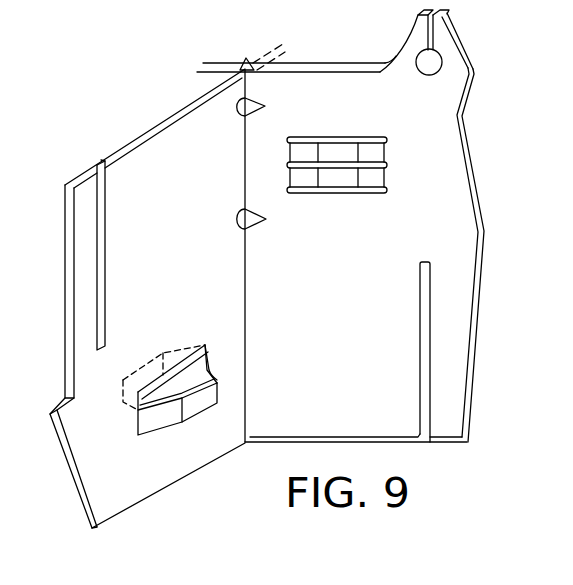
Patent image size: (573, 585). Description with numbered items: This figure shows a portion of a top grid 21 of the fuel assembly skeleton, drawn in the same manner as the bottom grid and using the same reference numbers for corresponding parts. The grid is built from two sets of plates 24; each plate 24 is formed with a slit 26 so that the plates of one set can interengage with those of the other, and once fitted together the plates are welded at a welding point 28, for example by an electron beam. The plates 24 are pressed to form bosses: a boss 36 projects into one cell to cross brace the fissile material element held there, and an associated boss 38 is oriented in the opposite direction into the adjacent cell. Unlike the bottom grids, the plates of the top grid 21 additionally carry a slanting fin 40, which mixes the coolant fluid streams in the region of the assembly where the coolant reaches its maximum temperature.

The top grid 21 is at (80, 161).
The plate 24 is at (180, 137).
The slit 26 is at (103, 195).
The welding point 28 is at (246, 57).
The boss 36 is at (337, 154).
The boss 38 is at (375, 174).
The slanting fin 40 is at (441, 33).